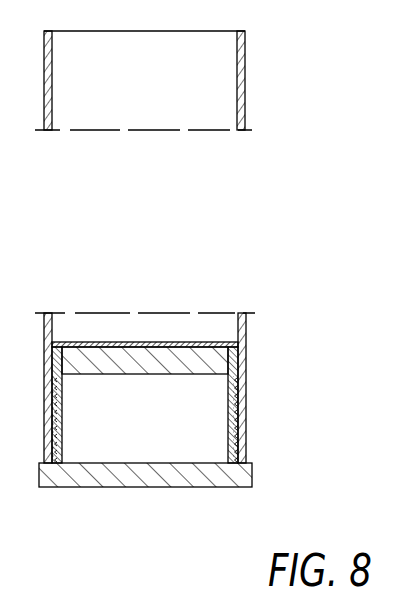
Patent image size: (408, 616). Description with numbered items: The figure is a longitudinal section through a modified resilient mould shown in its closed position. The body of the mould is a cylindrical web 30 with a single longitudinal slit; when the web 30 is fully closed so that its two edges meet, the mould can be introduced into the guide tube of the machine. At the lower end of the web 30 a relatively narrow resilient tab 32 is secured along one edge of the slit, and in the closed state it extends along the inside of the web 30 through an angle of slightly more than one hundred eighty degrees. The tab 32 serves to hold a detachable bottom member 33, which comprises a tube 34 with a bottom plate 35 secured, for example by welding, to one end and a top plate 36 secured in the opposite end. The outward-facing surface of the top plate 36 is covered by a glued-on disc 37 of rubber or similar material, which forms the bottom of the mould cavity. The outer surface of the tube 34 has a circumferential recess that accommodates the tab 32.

The cylindrical web 30 is at (243, 82).
The tab 32 is at (238, 412).
The detachable bottom member 33 is at (158, 409).
The tube 34 is at (63, 422).
The bottom plate 35 is at (160, 480).
The top plate 36 is at (152, 365).
The disc 37 is at (101, 342).